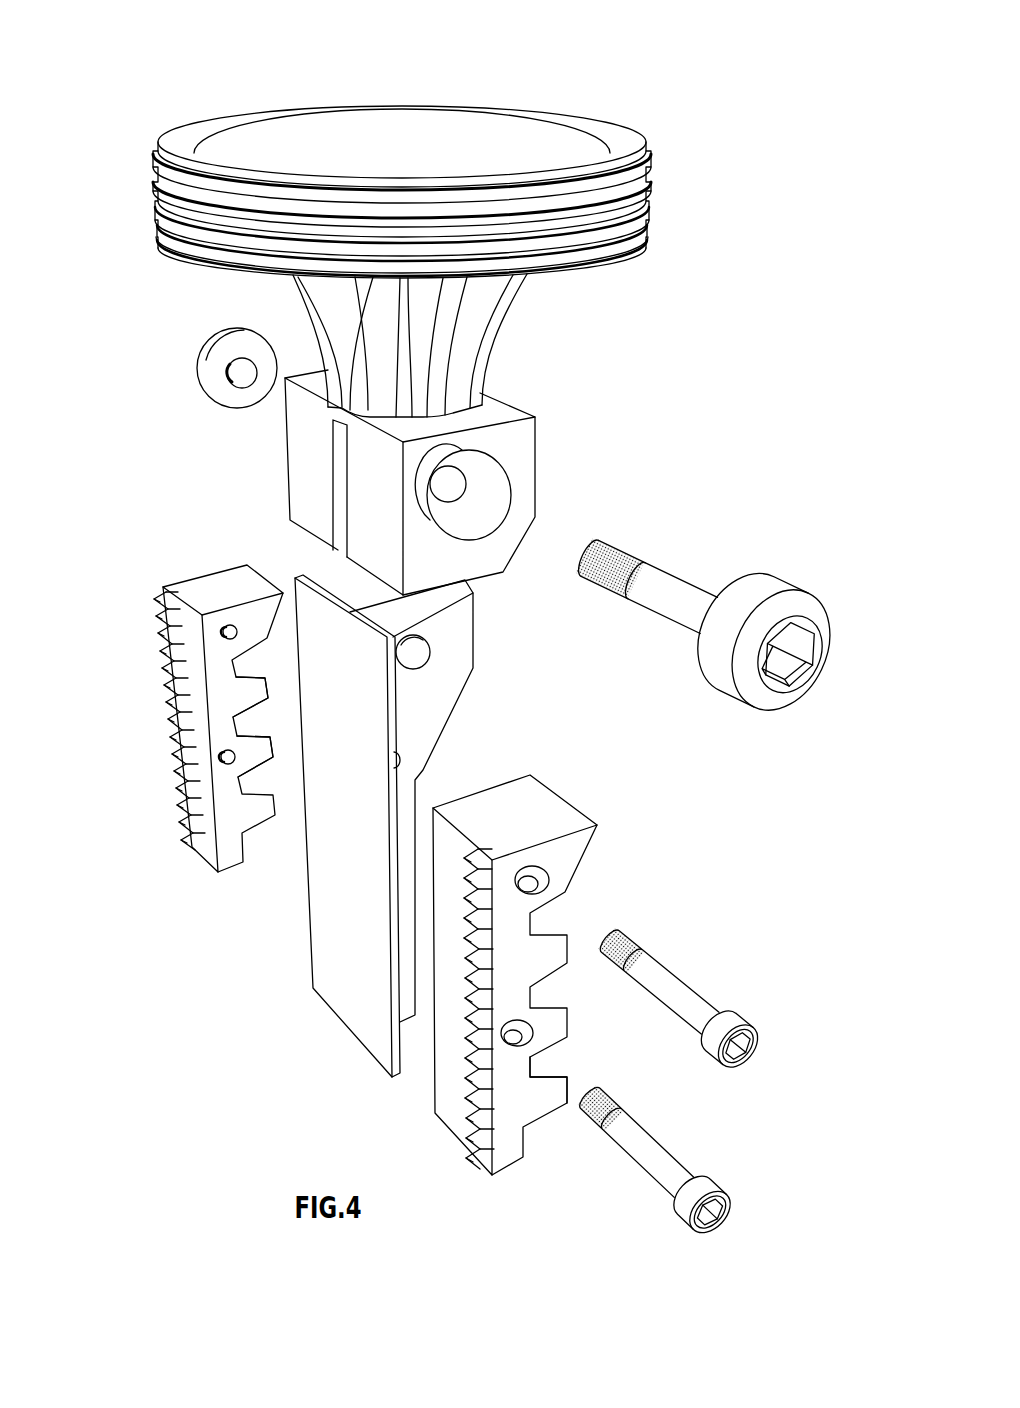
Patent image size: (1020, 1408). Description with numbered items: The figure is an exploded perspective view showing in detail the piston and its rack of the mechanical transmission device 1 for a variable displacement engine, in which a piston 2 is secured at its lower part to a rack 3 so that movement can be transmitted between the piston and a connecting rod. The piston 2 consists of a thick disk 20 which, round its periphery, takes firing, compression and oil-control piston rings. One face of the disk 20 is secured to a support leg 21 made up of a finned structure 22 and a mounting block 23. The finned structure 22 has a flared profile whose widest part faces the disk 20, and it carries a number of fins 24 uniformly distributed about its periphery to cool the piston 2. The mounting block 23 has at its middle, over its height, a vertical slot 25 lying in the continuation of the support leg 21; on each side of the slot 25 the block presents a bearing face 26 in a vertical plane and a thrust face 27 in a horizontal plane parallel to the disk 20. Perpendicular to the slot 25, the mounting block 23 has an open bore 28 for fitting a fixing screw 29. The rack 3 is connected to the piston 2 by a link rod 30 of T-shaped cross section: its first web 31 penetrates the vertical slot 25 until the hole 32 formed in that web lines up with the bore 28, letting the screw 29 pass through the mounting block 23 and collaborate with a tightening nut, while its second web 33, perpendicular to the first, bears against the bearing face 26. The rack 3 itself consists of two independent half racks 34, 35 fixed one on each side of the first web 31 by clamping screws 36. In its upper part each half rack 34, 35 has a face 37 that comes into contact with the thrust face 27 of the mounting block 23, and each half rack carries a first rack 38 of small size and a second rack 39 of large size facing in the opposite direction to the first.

The mechanical transmission device 1 is at (457, 627).
The piston 2 is at (366, 215).
The rack 3 is at (433, 866).
The thick disk 20 is at (375, 145).
The support leg 21 is at (460, 480).
The finned structure 22 is at (340, 345).
The mounting block 23 is at (520, 447).
The fins 24 is at (440, 383).
The vertical slot 25 is at (344, 482).
The bearing face 26 is at (310, 455).
The thrust face 27 is at (500, 590).
The open bore 28 is at (487, 520).
The fixing screw 29 is at (690, 598).
The link rod 30 is at (359, 826).
The first web 31 is at (420, 725).
The hole 32 is at (419, 658).
The second web 33 is at (358, 973).
The half rack 34 is at (174, 628).
The half rack 35 is at (580, 910).
The clamping screws 36 is at (678, 997).
The face 37 is at (218, 596).
The first rack 38 is at (168, 812).
The second rack 39 is at (258, 808).